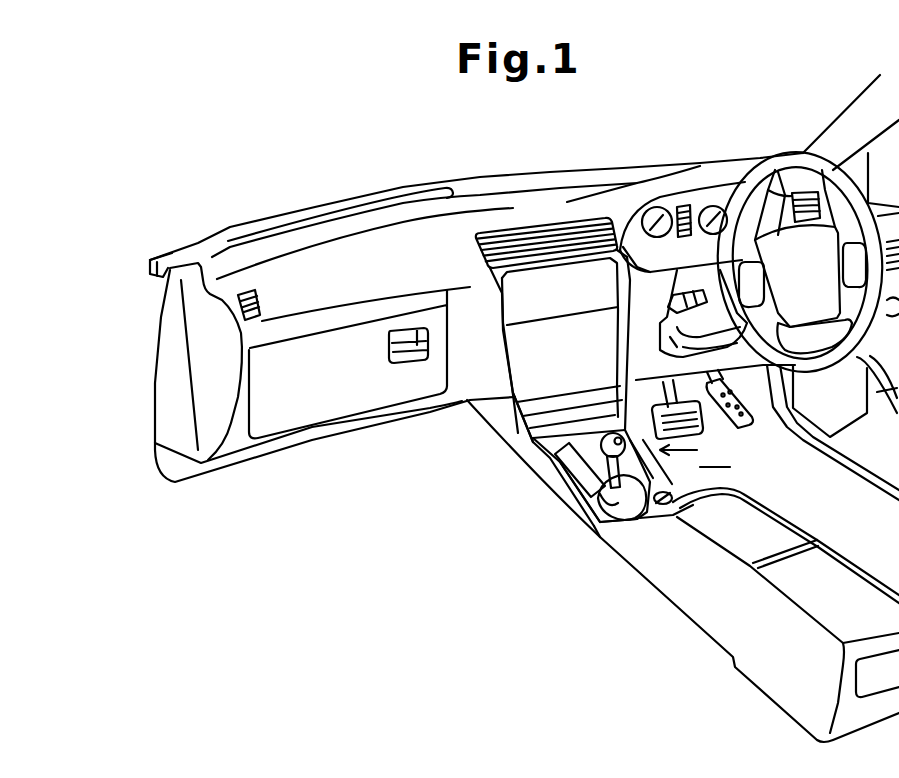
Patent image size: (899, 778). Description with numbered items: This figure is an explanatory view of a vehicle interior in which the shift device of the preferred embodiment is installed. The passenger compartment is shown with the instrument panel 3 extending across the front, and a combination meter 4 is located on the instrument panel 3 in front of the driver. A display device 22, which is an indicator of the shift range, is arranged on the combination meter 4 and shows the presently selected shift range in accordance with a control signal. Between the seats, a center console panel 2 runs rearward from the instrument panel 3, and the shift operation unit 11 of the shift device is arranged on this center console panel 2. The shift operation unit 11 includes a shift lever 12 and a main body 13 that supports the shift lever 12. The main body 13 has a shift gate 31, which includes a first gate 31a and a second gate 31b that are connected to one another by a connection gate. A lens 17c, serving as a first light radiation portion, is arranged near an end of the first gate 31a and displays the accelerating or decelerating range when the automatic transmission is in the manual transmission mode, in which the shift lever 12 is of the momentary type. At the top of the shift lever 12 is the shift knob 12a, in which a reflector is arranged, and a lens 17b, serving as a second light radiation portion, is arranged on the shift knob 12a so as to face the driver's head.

The center console panel 2 is at (783, 523).
The instrument panel 3 is at (408, 226).
The combination meter 4 is at (630, 210).
The shift operation unit 11 is at (694, 451).
The shift lever 12 is at (580, 433).
The shift knob 12a is at (580, 433).
The main body 13 is at (603, 518).
The lens (second light radiation portion) 17b is at (614, 432).
The lens (first light radiation portion) 17c is at (680, 510).
The display device 22 is at (695, 200).
The shift gate 31 is at (642, 518).
The first gate 31a is at (538, 456).
The second gate 31b is at (648, 478).